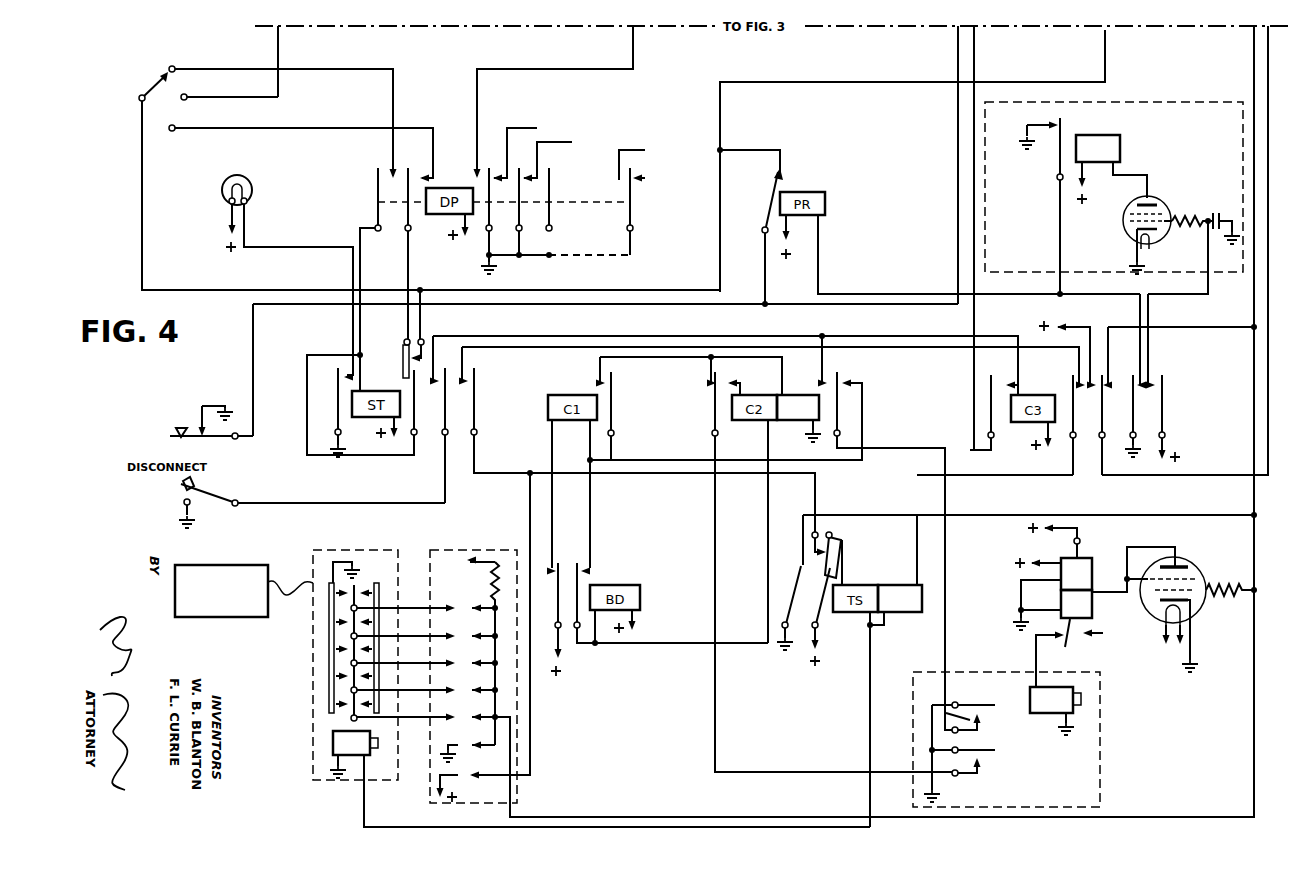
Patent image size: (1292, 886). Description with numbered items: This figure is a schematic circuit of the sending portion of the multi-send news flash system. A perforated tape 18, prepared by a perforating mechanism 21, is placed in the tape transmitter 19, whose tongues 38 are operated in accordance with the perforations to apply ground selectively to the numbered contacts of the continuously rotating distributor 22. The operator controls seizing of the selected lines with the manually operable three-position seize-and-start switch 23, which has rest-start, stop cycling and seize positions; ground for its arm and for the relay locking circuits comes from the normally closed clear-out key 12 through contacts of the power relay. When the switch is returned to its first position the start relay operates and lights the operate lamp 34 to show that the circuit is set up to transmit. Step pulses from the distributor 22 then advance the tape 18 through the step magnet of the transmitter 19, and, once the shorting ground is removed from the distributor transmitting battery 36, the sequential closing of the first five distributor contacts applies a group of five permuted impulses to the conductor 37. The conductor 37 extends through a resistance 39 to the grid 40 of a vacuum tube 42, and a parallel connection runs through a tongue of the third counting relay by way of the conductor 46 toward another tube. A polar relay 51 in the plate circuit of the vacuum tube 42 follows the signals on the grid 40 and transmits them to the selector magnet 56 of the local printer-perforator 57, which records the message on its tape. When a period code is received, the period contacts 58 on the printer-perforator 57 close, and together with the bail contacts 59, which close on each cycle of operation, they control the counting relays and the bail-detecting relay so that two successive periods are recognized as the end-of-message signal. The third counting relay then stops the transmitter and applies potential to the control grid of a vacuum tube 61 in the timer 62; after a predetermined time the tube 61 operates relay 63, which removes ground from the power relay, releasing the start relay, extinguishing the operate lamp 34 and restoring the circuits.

The clear-out key 12 is at (178, 432).
The perforated tape 18 is at (290, 600).
The tape transmitter 19 is at (306, 549).
The perforating mechanism 21 is at (233, 565).
The distributor 22 is at (503, 548).
The seize-and-start switch 23 is at (163, 72).
The operate lamp 34 is at (250, 190).
The distributor transmitting battery 36 is at (460, 560).
The conductor 37 is at (1254, 48).
The tongues of transmitter 38 is at (362, 588).
The resistance 39 is at (1230, 610).
The grid 40 is at (1190, 566).
The vacuum tube 42 is at (1160, 615).
The conductor 46 is at (1268, 79).
The polar relay 51 is at (1085, 606).
The selector magnet 56 is at (1072, 705).
The printer-perforator 57 is at (1103, 776).
The period contacts 58 is at (950, 715).
The bail contacts 59 is at (960, 754).
The vacuum tube 61 is at (1165, 199).
The timer 62 is at (1151, 100).
The relay 63 is at (1118, 152).